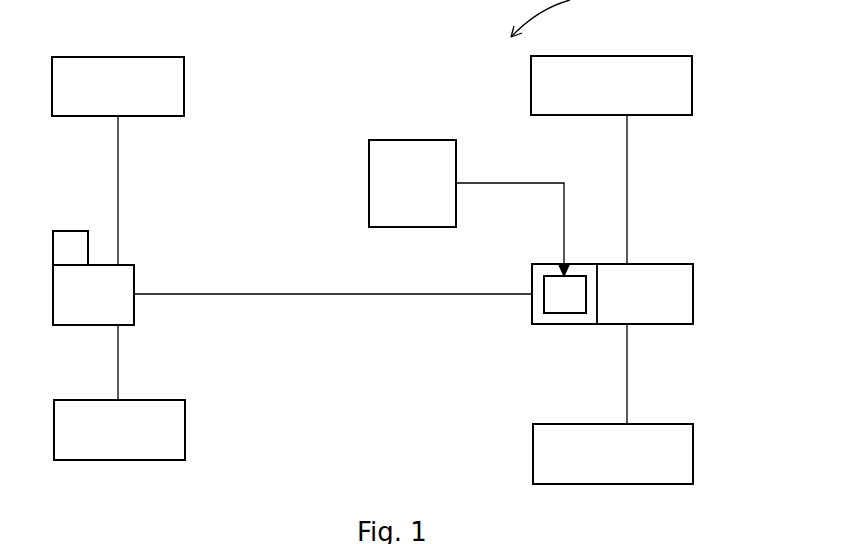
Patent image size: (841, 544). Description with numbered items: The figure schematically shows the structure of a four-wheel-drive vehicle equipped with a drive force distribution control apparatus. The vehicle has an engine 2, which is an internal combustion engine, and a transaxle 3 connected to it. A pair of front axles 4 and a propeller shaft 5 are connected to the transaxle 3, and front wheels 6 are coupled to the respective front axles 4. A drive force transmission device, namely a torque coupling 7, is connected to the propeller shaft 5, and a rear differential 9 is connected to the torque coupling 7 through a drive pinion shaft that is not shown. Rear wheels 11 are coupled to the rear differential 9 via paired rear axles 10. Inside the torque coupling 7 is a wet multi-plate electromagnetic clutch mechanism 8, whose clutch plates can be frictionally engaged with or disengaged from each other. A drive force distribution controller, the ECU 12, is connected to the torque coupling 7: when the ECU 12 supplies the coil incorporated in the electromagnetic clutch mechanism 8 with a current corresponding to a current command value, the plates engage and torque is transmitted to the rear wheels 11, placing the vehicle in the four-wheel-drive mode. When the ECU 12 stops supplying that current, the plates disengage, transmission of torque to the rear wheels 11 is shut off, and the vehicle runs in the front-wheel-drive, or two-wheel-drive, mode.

The engine 2 is at (70, 231).
The transaxle 3 is at (53, 313).
The front axles 4 is at (118, 190).
The propeller shaft 5 is at (222, 294).
The front wheels 6 is at (118, 57).
The drive force transmission device (torque coupling) 7 is at (582, 264).
The electromagnetic clutch mechanism 8 is at (563, 313).
The rear differential 9 is at (675, 294).
The rear axles 10 is at (627, 187).
The rear wheels 11 is at (692, 84).
The drive force distribution controller (ECU) 12 is at (412, 140).